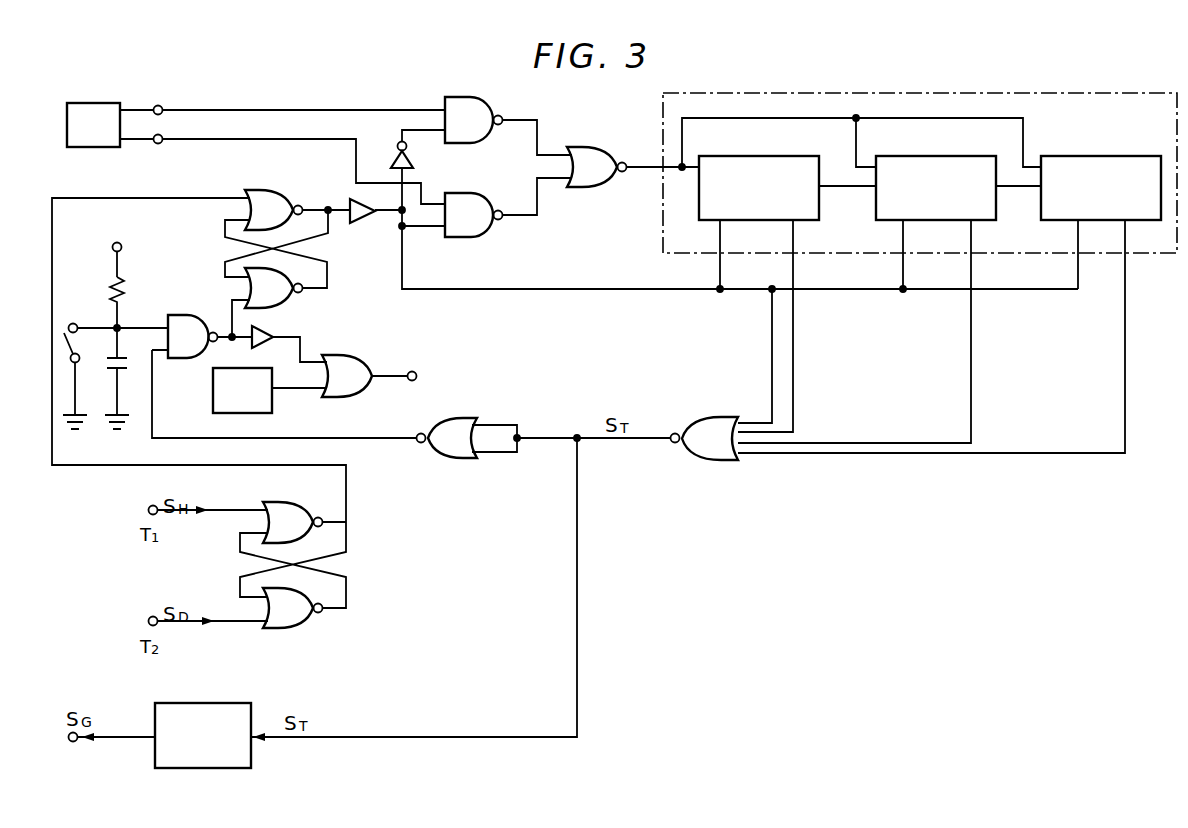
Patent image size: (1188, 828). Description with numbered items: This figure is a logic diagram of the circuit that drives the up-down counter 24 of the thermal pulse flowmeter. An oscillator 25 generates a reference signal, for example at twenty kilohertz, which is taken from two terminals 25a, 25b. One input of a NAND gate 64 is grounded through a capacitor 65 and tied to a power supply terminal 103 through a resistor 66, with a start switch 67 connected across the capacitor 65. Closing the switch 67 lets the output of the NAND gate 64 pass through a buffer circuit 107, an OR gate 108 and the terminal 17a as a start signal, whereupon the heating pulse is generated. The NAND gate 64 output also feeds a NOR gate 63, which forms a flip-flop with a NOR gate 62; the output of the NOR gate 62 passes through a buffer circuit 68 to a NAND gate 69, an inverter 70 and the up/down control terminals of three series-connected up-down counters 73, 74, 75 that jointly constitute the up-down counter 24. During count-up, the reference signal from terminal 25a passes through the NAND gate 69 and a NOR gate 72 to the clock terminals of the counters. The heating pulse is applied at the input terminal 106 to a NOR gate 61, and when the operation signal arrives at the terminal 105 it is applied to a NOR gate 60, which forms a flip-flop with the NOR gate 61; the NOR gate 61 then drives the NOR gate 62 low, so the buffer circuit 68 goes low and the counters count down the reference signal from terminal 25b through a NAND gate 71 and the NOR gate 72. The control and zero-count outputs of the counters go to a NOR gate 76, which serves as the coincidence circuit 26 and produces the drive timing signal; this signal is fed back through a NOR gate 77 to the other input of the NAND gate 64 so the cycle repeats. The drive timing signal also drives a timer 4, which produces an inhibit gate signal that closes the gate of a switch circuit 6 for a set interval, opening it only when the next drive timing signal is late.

The oscillator 25 is at (99, 103).
The terminal of the oscillator 25a is at (161, 143).
The terminal of the oscillator 25b is at (162, 106).
The NAND gate 71 is at (465, 97).
The NAND gate 69 is at (468, 193).
The inverter 70 is at (414, 167).
The NOR gate 72 is at (590, 147).
The buffer circuit 68 is at (368, 221).
The NOR gate 62 is at (278, 190).
The NOR gate 63 is at (305, 278).
The up-down counter 24 is at (971, 93).
The up-down counter 73 is at (773, 156).
The up-down counter 74 is at (950, 156).
The up-down counter 75 is at (1097, 156).
The power supply terminal 103 is at (122, 248).
The resistor 66 is at (125, 293).
The NAND gate 64 is at (193, 315).
The start switch 67 is at (74, 345).
The capacitor 65 is at (136, 369).
The buffer circuit 107 is at (270, 327).
The OR gate 108 is at (355, 355).
The switch circuit 6 is at (213, 391).
The terminal 17a is at (415, 372).
The NOR gate 77 is at (446, 418).
The NOR gate 76 is at (713, 460).
The coincidence circuit 26 is at (718, 461).
The NOR gate 61 is at (282, 502).
The NOR gate 60 is at (295, 629).
The input terminal 106 is at (151, 505).
The terminal 105 is at (151, 616).
The timer 4 is at (215, 703).